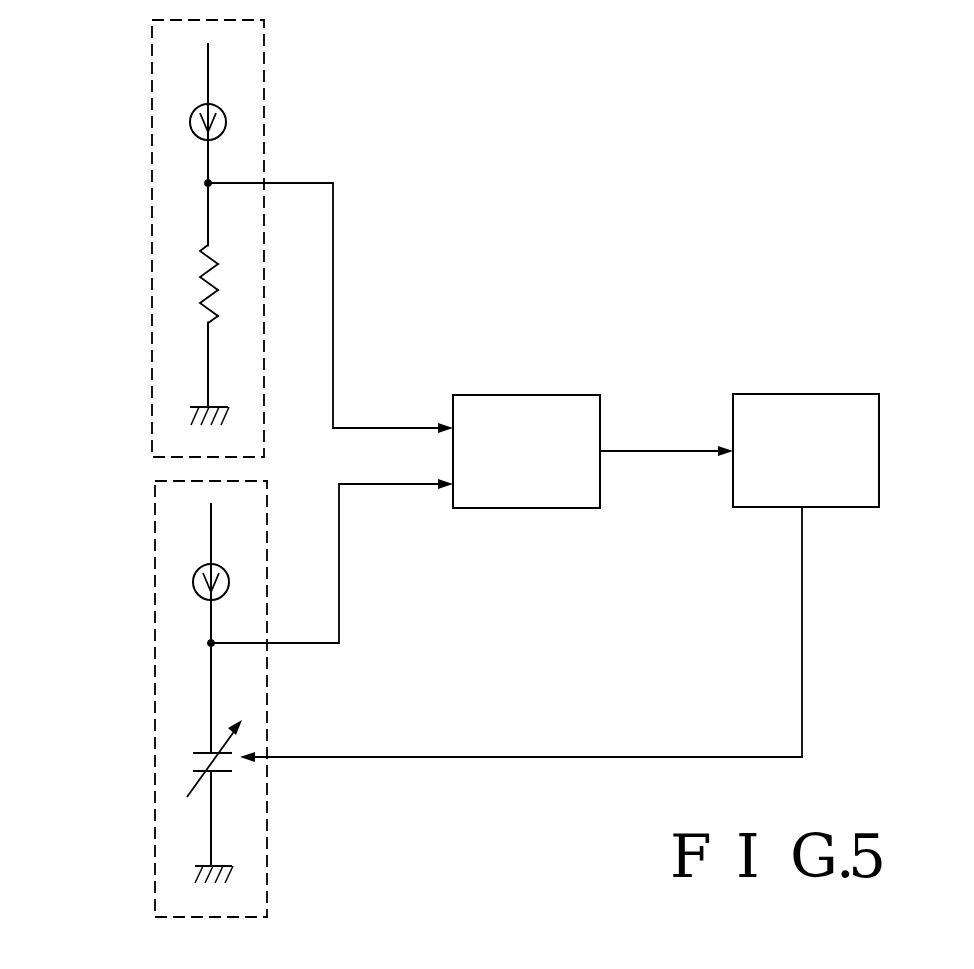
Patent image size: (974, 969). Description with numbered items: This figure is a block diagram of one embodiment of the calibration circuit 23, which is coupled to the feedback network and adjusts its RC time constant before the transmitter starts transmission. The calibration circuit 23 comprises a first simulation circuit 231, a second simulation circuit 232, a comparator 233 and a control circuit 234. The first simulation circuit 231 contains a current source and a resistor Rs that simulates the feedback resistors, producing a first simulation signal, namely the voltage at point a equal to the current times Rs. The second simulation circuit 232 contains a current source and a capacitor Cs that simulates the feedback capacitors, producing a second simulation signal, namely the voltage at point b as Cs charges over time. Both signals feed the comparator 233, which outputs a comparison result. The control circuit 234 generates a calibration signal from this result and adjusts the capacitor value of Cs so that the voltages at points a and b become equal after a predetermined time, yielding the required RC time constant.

The calibration circuit 23 is at (707, 265).
The first simulation circuit 231 is at (152, 396).
The second simulation circuit 232 is at (156, 856).
The comparator 233 is at (587, 508).
The control circuit 234 is at (865, 507).